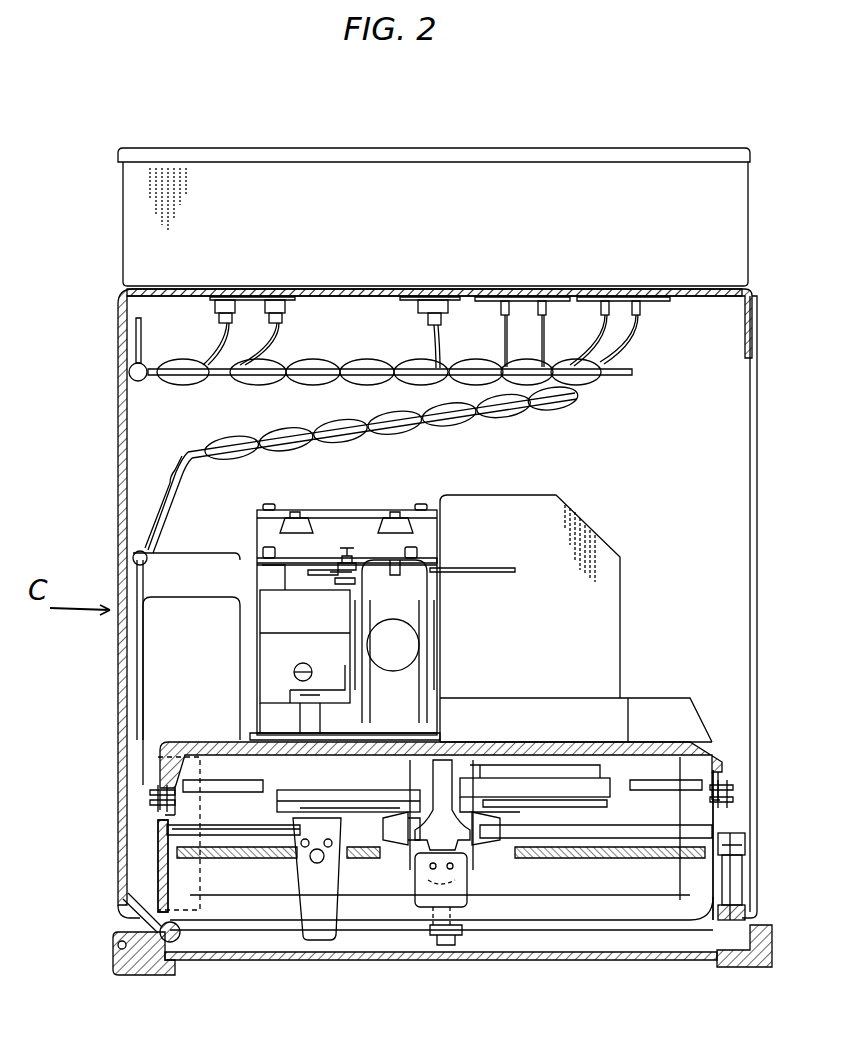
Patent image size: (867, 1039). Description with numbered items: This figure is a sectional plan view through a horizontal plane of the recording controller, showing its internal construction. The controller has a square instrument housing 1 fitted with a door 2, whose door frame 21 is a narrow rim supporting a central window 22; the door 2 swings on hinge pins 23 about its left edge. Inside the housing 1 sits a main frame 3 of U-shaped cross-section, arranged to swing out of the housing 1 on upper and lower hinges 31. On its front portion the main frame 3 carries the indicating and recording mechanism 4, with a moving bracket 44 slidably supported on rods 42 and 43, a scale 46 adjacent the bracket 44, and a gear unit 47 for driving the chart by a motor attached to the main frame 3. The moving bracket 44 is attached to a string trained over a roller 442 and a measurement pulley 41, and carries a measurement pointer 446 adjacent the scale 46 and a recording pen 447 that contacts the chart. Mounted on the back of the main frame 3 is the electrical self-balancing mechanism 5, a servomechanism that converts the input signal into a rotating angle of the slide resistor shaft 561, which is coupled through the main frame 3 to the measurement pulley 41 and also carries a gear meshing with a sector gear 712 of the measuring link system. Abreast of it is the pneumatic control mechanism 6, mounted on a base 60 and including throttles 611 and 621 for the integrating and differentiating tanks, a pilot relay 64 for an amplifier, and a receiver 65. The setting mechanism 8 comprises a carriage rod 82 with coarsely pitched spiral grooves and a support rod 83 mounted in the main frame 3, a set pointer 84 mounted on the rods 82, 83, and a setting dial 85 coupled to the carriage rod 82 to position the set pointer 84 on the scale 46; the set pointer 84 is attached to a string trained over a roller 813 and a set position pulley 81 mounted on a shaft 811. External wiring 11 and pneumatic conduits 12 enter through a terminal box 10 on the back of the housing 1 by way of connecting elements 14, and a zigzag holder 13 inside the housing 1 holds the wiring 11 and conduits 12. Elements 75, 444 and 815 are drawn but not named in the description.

The instrument housing 1 is at (758, 420).
The door 2 is at (758, 968).
The main frame 3 is at (723, 732).
The indicating and recording mechanism 4 is at (380, 940).
The electrical self-balancing mechanism 5 is at (635, 530).
The pneumatic control mechanism 6 is at (231, 519).
The setting mechanism 8 is at (699, 945).
The terminal box 10 is at (637, 148).
The wiring 11 is at (212, 345).
The pneumatic conduits 12 is at (636, 338).
The zigzag holder 13 is at (628, 374).
The connecting elements 14 is at (225, 295).
The door frame 21 is at (140, 975).
The window 22 is at (548, 962).
The hinge pins 23 is at (120, 945).
The hinges 31 is at (178, 945).
The measurement pulley 41 is at (594, 775).
The rod 42 is at (605, 840).
The rod 43 is at (618, 765).
The moving bracket 44 is at (490, 877).
The scale 46 is at (618, 932).
The gear unit 47 is at (160, 620).
The base 60 is at (255, 745).
The pilot relay 64 is at (268, 610).
The receiver 65 is at (405, 640).
The adjusting screw 75 is at (347, 545).
The set position pulley 81 is at (345, 800).
The carriage rod 82 is at (270, 858).
The support rod 83 is at (250, 838).
The set pointer 84 is at (312, 940).
The setting dial 85 is at (732, 922).
The roller 442 is at (168, 760).
The bar 444 is at (700, 785).
The measurement pointer 446 is at (458, 945).
The recording pen 447 is at (420, 905).
The slide resistor shaft 561 is at (545, 740).
The throttle 611 is at (294, 515).
The throttle 621 is at (395, 515).
The sector gear 712 is at (478, 568).
The shaft 811 is at (372, 745).
The roller 813 is at (175, 808).
The pulley 815 is at (712, 805).